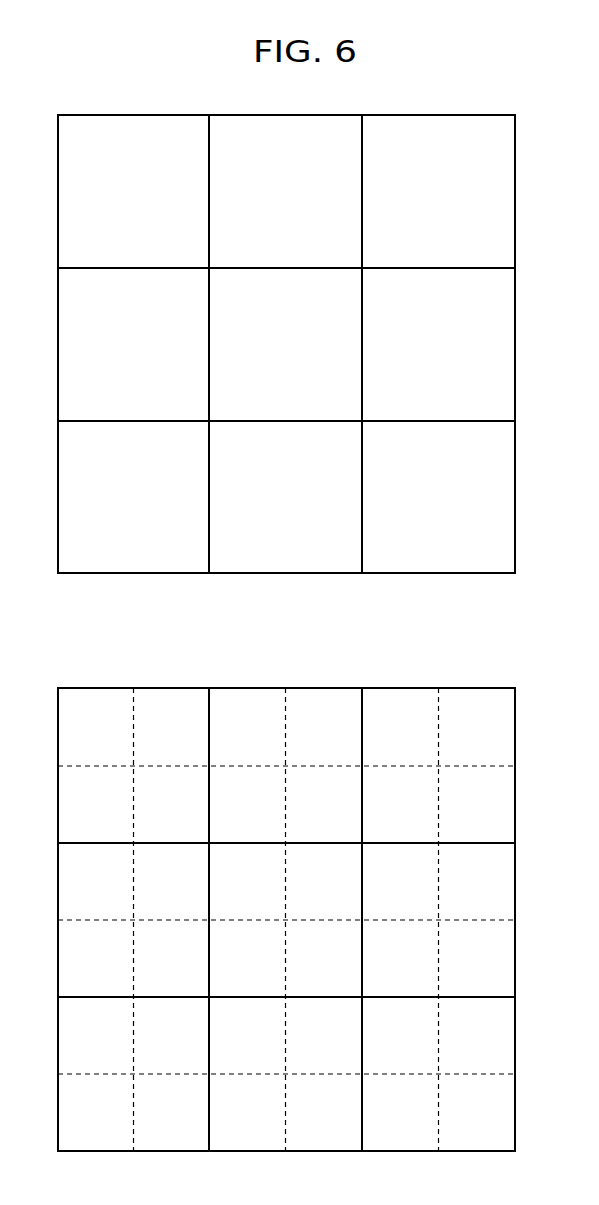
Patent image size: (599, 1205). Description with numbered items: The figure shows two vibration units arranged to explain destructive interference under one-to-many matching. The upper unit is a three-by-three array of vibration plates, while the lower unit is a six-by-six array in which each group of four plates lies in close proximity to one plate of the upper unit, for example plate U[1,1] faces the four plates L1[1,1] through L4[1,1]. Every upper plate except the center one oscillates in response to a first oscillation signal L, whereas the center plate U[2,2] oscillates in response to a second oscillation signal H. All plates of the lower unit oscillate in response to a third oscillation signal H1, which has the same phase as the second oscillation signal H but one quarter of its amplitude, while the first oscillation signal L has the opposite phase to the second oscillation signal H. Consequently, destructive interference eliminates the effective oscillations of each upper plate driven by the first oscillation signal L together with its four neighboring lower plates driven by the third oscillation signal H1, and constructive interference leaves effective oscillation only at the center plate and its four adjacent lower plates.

The first oscillation signal L is at (285, 359).
The second oscillation signal H is at (285, 360).
The third oscillation signal H1 is at (287, 936).